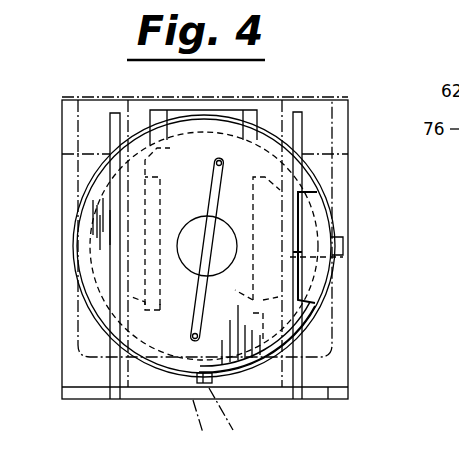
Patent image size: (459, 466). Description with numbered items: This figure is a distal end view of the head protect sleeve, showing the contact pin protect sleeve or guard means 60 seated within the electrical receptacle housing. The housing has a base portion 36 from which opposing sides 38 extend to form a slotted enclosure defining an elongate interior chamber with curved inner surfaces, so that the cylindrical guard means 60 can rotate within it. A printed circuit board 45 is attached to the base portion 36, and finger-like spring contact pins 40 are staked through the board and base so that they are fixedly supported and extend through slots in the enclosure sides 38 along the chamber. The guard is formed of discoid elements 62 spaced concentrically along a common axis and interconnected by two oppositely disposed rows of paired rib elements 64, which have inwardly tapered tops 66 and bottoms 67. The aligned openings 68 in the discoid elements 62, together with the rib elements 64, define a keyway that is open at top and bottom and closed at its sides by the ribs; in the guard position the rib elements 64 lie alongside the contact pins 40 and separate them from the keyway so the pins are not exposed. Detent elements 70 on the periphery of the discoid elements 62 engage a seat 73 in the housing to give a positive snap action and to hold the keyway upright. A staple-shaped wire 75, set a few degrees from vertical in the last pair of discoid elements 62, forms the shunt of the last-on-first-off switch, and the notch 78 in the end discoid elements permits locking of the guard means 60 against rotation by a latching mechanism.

The base portion 36 is at (330, 401).
The opposing sides 38 is at (350, 295).
The contact pins 40 is at (109, 136).
The printed circuit board 45 is at (203, 435).
The contact pin protect sleeve 60 is at (358, 121).
The discoid elements 62 is at (167, 128).
The rib elements 64 is at (78, 252).
The tapered tops 66 is at (137, 188).
The tapered bottoms 67 is at (132, 298).
The aligned openings 68 is at (340, 157).
The detent elements 70 is at (200, 384).
The seat 73 is at (210, 385).
The staple-shaped wire 75 is at (226, 162).
The notch 78 is at (302, 212).